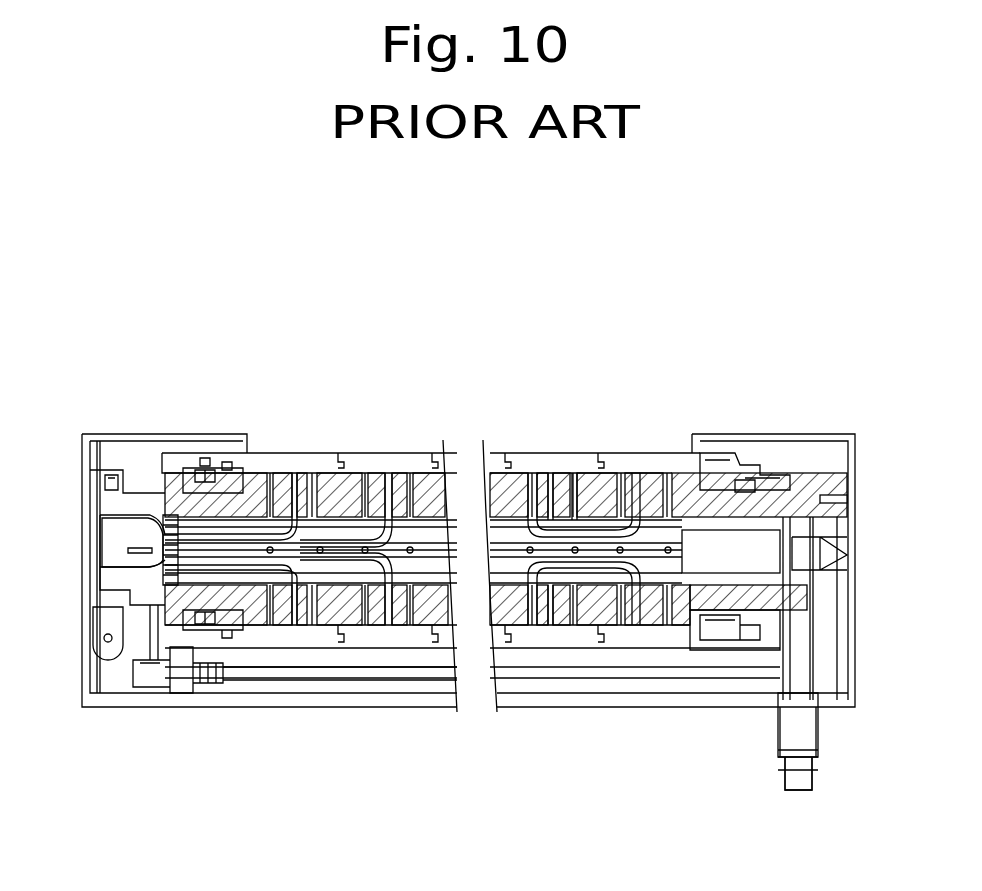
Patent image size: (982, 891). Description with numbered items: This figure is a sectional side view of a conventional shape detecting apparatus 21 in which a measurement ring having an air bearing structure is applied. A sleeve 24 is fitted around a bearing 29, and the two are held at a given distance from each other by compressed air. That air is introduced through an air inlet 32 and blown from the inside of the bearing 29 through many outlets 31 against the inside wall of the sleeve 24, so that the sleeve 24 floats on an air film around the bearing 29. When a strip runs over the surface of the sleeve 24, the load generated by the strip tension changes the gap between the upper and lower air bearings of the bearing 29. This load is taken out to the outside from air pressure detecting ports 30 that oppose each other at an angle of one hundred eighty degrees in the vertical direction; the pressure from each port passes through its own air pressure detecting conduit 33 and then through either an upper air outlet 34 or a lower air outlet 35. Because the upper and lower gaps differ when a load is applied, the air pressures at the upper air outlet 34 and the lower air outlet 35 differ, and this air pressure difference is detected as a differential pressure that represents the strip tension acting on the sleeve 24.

The shape detecting apparatus 21 is at (765, 425).
The sleeve 24 is at (393, 457).
The bearing 29 is at (607, 457).
The air pressure detecting port 30 is at (553, 520).
The outlet 31 is at (317, 457).
The air inlet 32 is at (800, 733).
The air pressure detecting conduit 33 is at (545, 510).
The upper air outlet 34 is at (163, 542).
The lower air outlet 35 is at (163, 558).